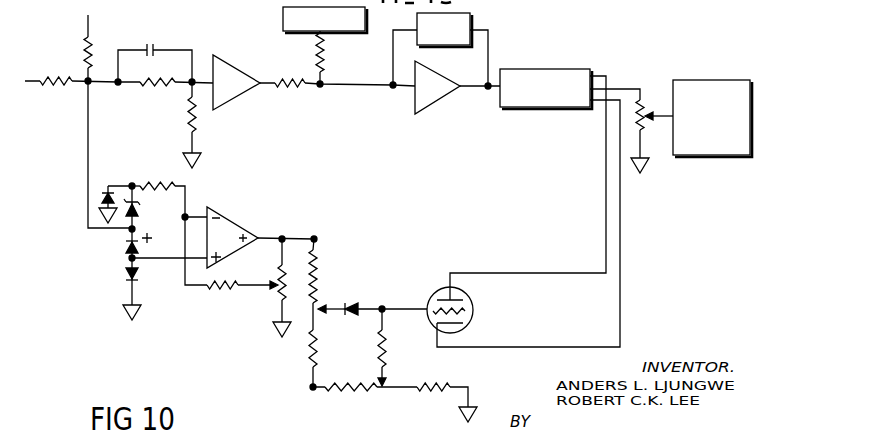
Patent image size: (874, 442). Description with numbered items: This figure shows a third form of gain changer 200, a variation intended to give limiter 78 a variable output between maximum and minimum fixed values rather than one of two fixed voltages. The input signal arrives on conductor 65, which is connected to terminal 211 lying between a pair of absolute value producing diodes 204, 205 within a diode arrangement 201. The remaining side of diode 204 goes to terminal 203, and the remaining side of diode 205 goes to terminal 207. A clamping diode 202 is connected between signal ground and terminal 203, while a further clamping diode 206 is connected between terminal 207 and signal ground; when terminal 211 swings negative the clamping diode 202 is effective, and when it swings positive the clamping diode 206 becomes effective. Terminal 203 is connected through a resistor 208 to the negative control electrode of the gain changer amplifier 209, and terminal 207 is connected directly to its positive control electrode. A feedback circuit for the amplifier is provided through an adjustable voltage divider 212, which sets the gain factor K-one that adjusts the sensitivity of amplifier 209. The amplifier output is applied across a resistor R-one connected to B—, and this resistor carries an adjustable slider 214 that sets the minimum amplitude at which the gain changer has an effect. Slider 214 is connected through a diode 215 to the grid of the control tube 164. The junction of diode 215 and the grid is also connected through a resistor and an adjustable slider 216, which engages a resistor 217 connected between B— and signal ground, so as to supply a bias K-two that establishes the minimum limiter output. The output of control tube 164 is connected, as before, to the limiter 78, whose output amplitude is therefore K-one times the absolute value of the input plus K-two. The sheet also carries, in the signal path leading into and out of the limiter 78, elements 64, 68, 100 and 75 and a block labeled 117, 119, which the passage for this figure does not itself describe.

The feedback capacitor 64 is at (179, 47).
The conductor 65 is at (88, 132).
The amplifier 68 is at (231, 100).
The oscillator resistor 100 is at (324, 38).
The amplifier 75 is at (435, 102).
The limiter 78 is at (552, 70).
The filter 117 is at (705, 157).
The servo 119 is at (719, 132).
The gain changer 200 is at (438, 185).
The diode arrangement 201 is at (159, 181).
The clamping diode 202 is at (106, 193).
The terminal 203 is at (129, 173).
The absolute value producing diode 204 is at (137, 208).
The absolute value producing diode 205 is at (129, 247).
The clamping diode 206 is at (138, 275).
The terminal 207 is at (129, 261).
The resistor 208 is at (173, 188).
The gain changer amplifier 209 is at (231, 222).
The terminal 211 is at (136, 231).
The adjustable voltage divider 212 is at (296, 284).
The adjustable slider 214 is at (320, 307).
The diode 215 is at (359, 307).
The adjustable slider 216 is at (387, 350).
The resistor 217 is at (383, 393).
The control tube 164 is at (474, 311).